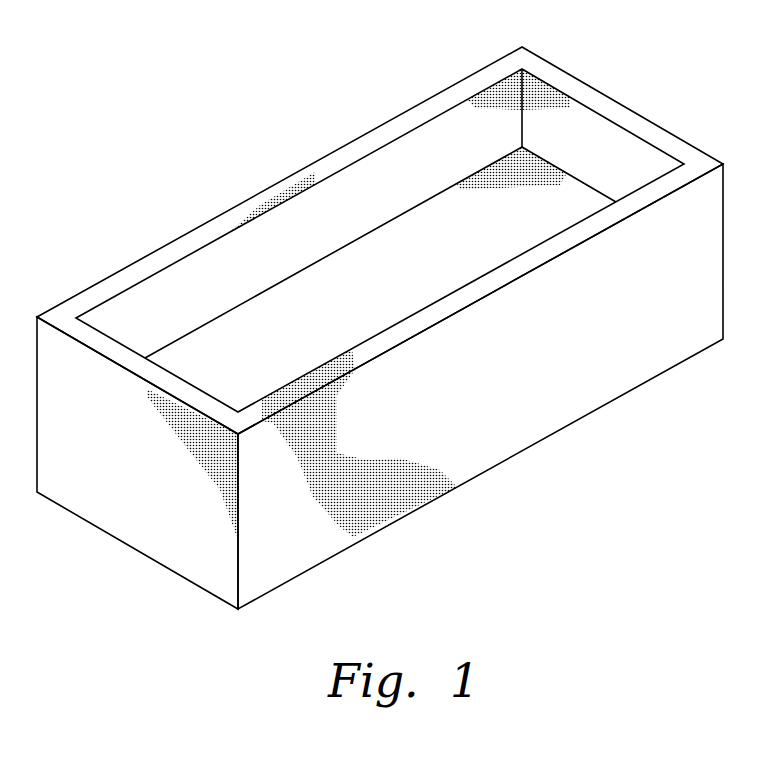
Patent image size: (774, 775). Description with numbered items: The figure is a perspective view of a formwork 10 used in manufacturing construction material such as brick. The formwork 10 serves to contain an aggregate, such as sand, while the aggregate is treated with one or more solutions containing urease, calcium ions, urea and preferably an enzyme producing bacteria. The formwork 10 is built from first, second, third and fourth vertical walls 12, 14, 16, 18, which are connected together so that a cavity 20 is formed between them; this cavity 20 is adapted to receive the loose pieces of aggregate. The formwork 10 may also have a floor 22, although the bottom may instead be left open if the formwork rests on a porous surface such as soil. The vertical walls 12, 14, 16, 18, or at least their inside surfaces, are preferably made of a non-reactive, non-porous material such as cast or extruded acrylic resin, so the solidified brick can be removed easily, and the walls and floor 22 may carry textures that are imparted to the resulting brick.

The formwork 10 is at (279, 618).
The first vertical wall 12 is at (552, 339).
The second vertical wall 14 is at (283, 192).
The third vertical wall 16 is at (192, 500).
The fourth vertical wall 18 is at (628, 105).
The cavity 20 is at (394, 156).
The floor 22 is at (252, 333).